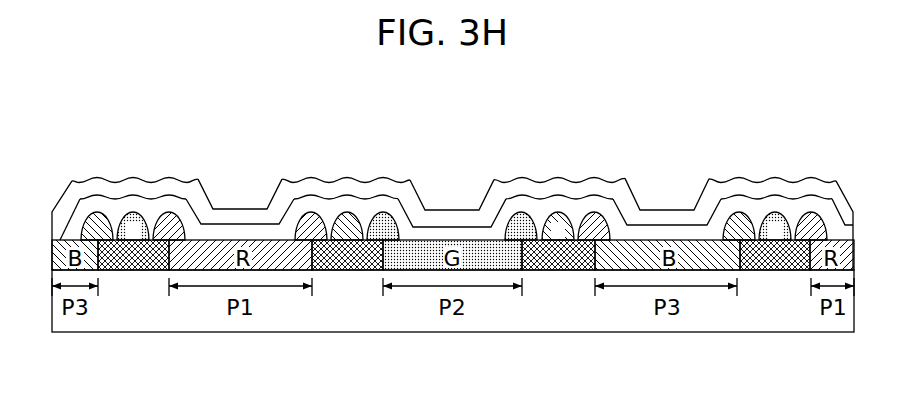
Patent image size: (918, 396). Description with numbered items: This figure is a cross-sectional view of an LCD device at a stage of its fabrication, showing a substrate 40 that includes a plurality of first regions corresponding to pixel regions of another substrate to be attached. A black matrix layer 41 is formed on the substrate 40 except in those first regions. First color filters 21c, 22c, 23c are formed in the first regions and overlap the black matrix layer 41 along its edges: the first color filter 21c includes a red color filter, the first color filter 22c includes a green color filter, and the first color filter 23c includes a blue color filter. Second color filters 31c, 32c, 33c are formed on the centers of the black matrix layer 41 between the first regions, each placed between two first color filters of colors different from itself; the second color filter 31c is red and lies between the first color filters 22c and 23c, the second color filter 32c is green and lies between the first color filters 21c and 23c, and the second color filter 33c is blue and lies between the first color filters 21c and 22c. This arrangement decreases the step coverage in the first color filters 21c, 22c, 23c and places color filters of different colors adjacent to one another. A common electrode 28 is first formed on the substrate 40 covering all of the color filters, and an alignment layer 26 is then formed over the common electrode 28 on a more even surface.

The first color filter 21c is at (258, 224).
The first color filter 22c is at (463, 240).
The first color filter 23c is at (58, 222).
The alignment layer 26 is at (600, 186).
The common electrode 28 is at (607, 207).
The second color filter 31c is at (558, 212).
The second color filter 32c is at (135, 211).
The second color filter 33c is at (349, 211).
The substrate 40 is at (808, 318).
The black matrix layer 41 is at (774, 272).